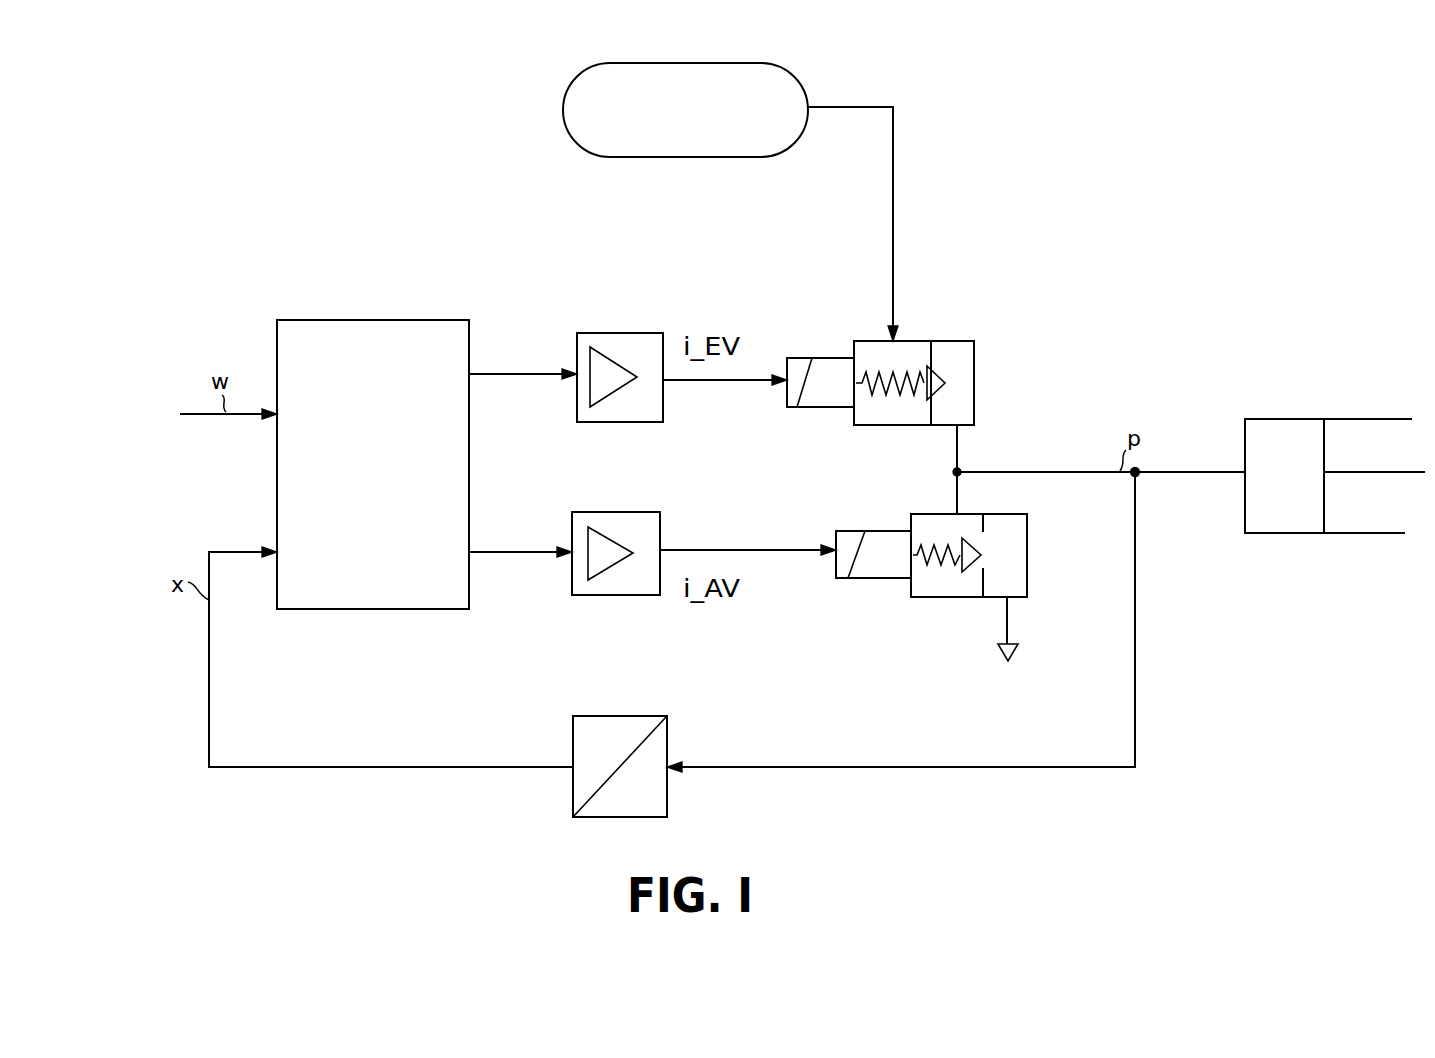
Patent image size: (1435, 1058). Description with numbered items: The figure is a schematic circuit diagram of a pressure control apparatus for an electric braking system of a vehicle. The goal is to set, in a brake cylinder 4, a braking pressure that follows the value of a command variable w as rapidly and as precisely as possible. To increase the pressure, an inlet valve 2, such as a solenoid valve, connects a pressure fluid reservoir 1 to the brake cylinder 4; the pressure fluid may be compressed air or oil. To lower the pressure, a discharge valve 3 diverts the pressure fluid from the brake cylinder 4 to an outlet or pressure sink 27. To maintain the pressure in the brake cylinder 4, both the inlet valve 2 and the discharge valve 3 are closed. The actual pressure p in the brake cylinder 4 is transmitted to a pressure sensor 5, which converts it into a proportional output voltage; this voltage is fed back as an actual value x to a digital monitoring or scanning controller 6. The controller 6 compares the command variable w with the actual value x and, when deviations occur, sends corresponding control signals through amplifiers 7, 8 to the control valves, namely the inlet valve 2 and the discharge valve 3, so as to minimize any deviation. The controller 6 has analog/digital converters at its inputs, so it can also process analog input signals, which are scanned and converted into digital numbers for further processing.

The pressure fluid reservoir 1 is at (690, 157).
The inlet valve 2 is at (974, 371).
The discharge valve 3 is at (1027, 557).
The brake cylinder 4 is at (1298, 419).
The pressure sensor 5 is at (667, 722).
The digital monitoring or scanning controller 6 is at (373, 320).
The amplifier 7 is at (600, 333).
The amplifier 8 is at (603, 512).
The outlet or pressure sink 27 is at (1010, 661).